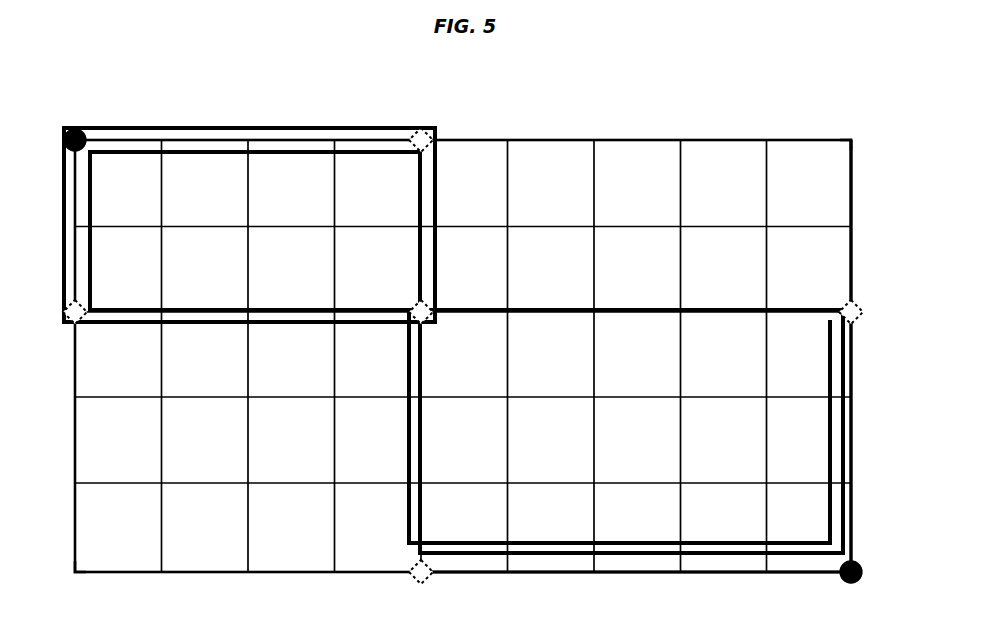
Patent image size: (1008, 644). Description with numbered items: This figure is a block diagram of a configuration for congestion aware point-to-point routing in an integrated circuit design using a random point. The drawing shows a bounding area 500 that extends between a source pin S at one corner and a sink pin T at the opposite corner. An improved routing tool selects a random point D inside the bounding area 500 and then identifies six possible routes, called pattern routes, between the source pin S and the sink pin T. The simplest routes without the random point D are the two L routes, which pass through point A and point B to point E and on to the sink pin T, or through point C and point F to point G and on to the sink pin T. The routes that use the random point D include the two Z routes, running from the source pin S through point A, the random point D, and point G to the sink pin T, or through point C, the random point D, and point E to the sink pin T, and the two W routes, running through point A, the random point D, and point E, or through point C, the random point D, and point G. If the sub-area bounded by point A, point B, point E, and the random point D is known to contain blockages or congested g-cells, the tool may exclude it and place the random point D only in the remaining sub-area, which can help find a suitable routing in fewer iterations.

The bounding area 500 is at (796, 100).
The source pin S is at (77, 122).
The sink pin T is at (844, 590).
The point A is at (421, 130).
The point B is at (856, 134).
The point C is at (65, 312).
The random point D is at (414, 306).
The point E is at (859, 312).
The point F is at (67, 579).
The point G is at (421, 587).